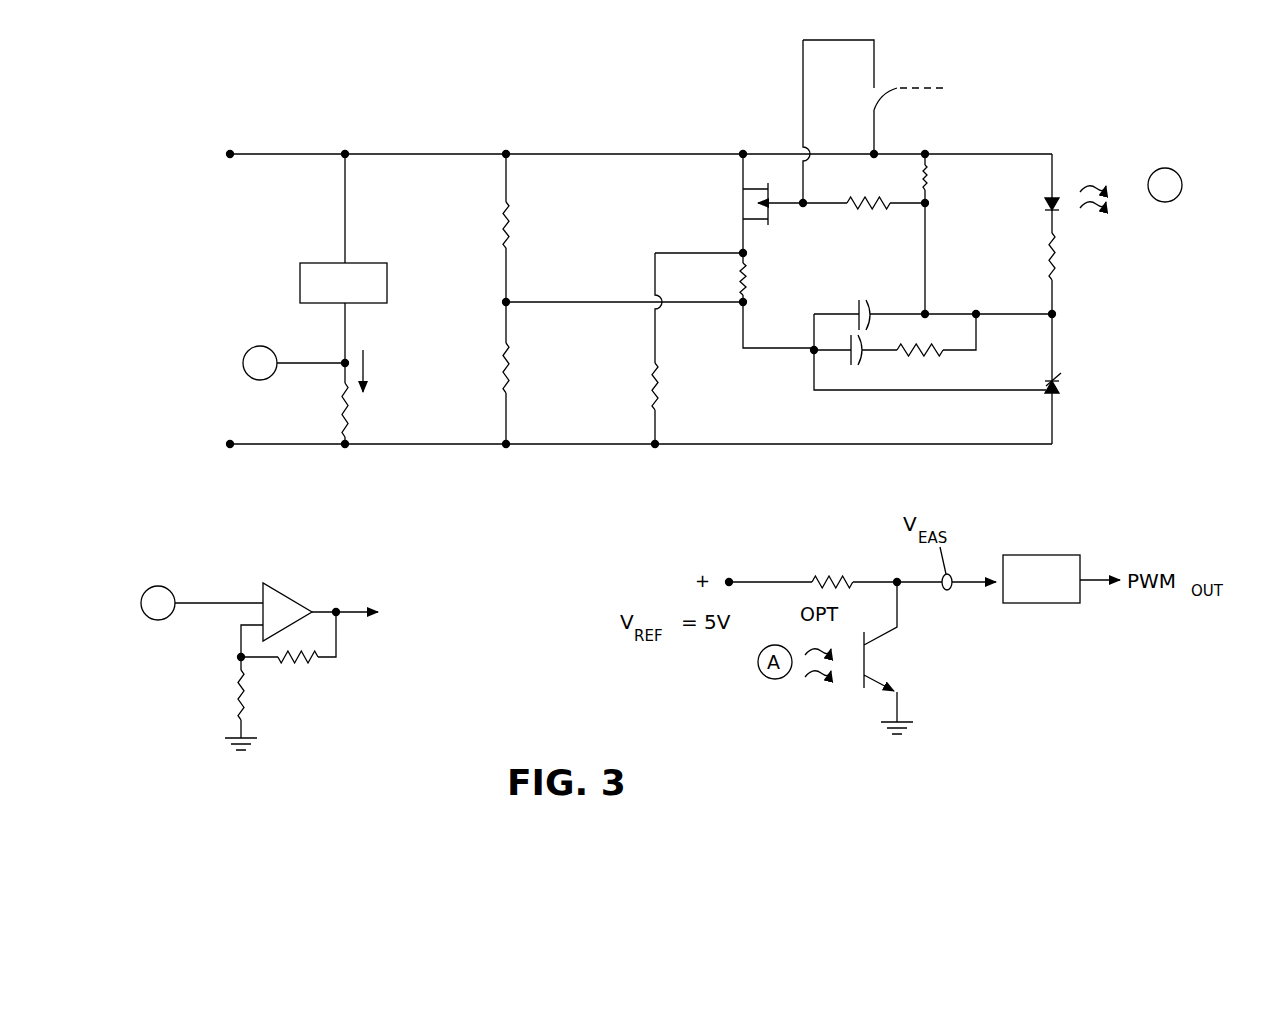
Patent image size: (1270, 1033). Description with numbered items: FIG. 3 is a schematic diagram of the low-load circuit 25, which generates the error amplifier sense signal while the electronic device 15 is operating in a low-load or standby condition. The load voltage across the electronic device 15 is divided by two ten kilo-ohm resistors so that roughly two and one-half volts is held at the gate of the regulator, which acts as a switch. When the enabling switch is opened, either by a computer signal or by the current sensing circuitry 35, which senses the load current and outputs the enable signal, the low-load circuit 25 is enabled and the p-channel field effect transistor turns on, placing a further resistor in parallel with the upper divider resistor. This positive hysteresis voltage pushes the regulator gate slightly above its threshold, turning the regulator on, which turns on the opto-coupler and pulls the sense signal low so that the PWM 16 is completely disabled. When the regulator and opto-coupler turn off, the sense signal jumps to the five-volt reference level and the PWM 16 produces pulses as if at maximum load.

The low-load circuit 25 is at (410, 79).
The electronic device 15 is at (318, 262).
The current sensing circuitry 35 is at (338, 575).
The PWM 16 is at (1042, 553).